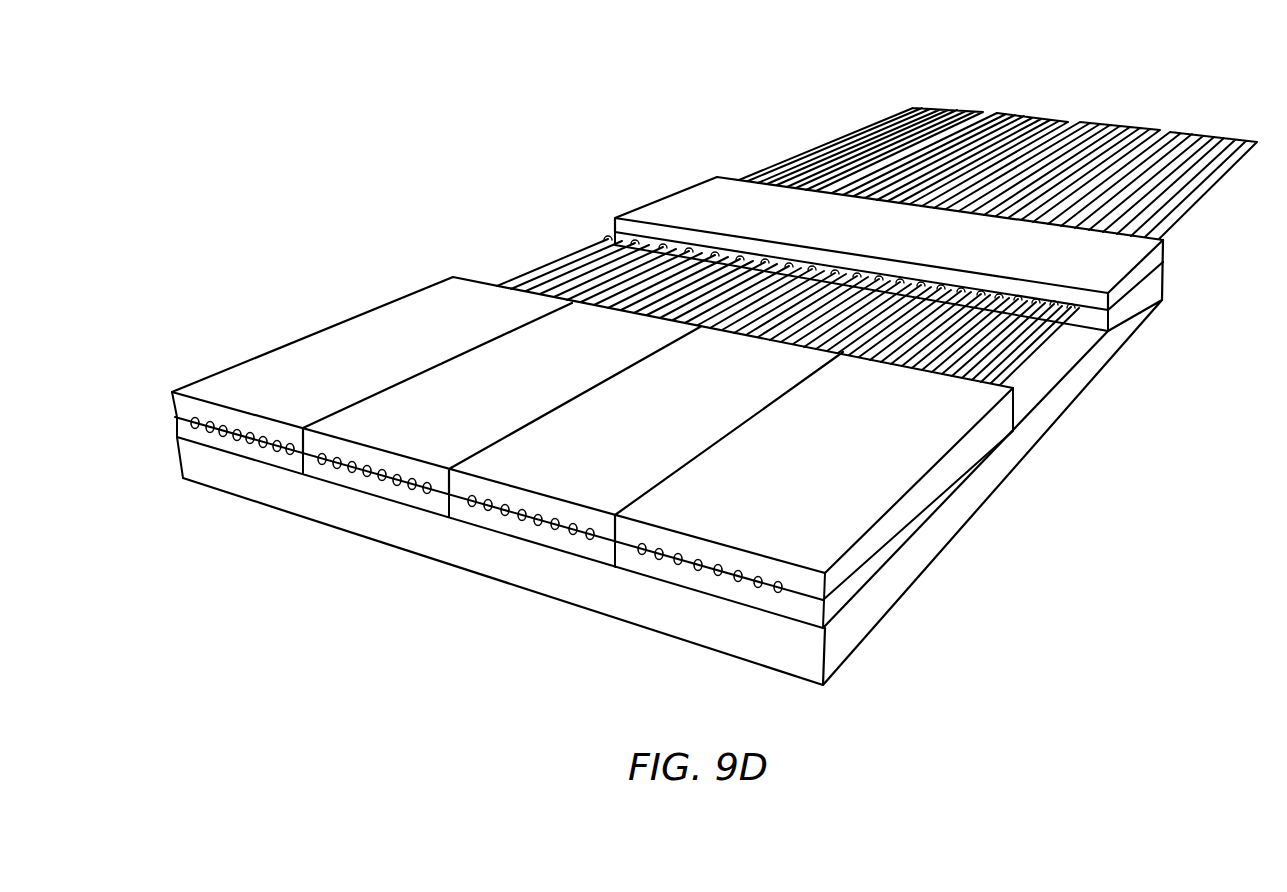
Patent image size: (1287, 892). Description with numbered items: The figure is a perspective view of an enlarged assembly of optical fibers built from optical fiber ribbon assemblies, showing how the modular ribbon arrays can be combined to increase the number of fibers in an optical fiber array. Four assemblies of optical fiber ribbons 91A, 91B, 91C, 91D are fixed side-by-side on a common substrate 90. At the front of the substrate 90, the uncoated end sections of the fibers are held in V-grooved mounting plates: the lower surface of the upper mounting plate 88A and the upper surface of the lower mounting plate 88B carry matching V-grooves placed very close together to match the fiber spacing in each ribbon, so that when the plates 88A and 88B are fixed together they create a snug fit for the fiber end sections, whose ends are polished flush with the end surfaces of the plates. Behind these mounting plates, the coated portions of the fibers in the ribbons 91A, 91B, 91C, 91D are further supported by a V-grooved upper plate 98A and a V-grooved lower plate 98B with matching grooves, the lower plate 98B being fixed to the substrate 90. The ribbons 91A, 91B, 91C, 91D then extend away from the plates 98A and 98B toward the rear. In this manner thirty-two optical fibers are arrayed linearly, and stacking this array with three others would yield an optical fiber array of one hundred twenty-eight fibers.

The mounting plate 88A is at (837, 542).
The mounting plate 88B is at (902, 533).
The substrate 90 is at (1000, 470).
The upper plate 98A is at (1105, 262).
The lower plate 98B is at (1125, 303).
The optical fiber ribbon 91A is at (1258, 137).
The optical fiber ribbon 91B is at (1160, 125).
The optical fiber ribbon 91C is at (1068, 115).
The optical fiber ribbon 91D is at (983, 107).